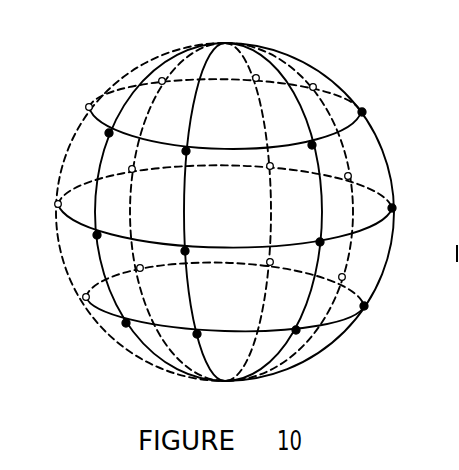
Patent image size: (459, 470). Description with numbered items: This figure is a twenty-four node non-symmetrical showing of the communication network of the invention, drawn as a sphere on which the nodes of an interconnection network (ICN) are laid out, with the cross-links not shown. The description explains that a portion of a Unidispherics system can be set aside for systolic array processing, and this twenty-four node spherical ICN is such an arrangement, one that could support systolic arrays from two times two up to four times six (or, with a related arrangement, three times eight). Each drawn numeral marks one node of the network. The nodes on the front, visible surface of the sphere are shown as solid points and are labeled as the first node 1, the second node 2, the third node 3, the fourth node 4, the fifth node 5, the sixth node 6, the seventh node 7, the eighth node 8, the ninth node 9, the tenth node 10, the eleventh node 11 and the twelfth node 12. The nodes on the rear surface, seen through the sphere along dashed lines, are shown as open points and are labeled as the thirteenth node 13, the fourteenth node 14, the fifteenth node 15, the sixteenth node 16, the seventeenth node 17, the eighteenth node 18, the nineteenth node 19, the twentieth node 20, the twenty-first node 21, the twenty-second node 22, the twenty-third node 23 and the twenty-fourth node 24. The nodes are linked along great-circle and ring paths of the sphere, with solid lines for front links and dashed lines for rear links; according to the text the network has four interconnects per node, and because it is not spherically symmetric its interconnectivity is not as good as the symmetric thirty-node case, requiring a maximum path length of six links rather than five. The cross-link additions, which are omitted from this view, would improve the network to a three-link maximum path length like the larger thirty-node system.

The sphere surface grid point 1 is at (365, 110).
The sphere surface grid point 2 is at (395, 210).
The sphere surface grid point 3 is at (367, 308).
The sphere surface grid point 4 is at (309, 143).
The sphere surface grid point 5 is at (317, 240).
The sphere surface grid point 6 is at (293, 328).
The sphere surface grid point 7 is at (189, 149).
The sphere surface grid point 8 is at (188, 248).
The sphere surface grid point 9 is at (200, 332).
The sphere surface grid point 10 is at (106, 135).
The sphere surface grid point 11 is at (95, 238).
The sphere surface grid point 12 is at (127, 320).
The rear sphere surface grid point 13 is at (86, 105).
The rear sphere surface grid point 14 is at (55, 202).
The rear sphere surface grid point 15 is at (83, 299).
The rear sphere surface grid point 16 is at (164, 84).
The rear sphere surface grid point 17 is at (134, 172).
The rear sphere surface grid point 18 is at (143, 270).
The rear sphere surface grid point 19 is at (254, 81).
The rear sphere surface grid point 20 is at (272, 169).
The rear sphere surface grid point 21 is at (272, 265).
The rear sphere surface grid point 22 is at (316, 85).
The rear sphere surface grid point 23 is at (350, 174).
The rear sphere surface grid point 24 is at (345, 276).